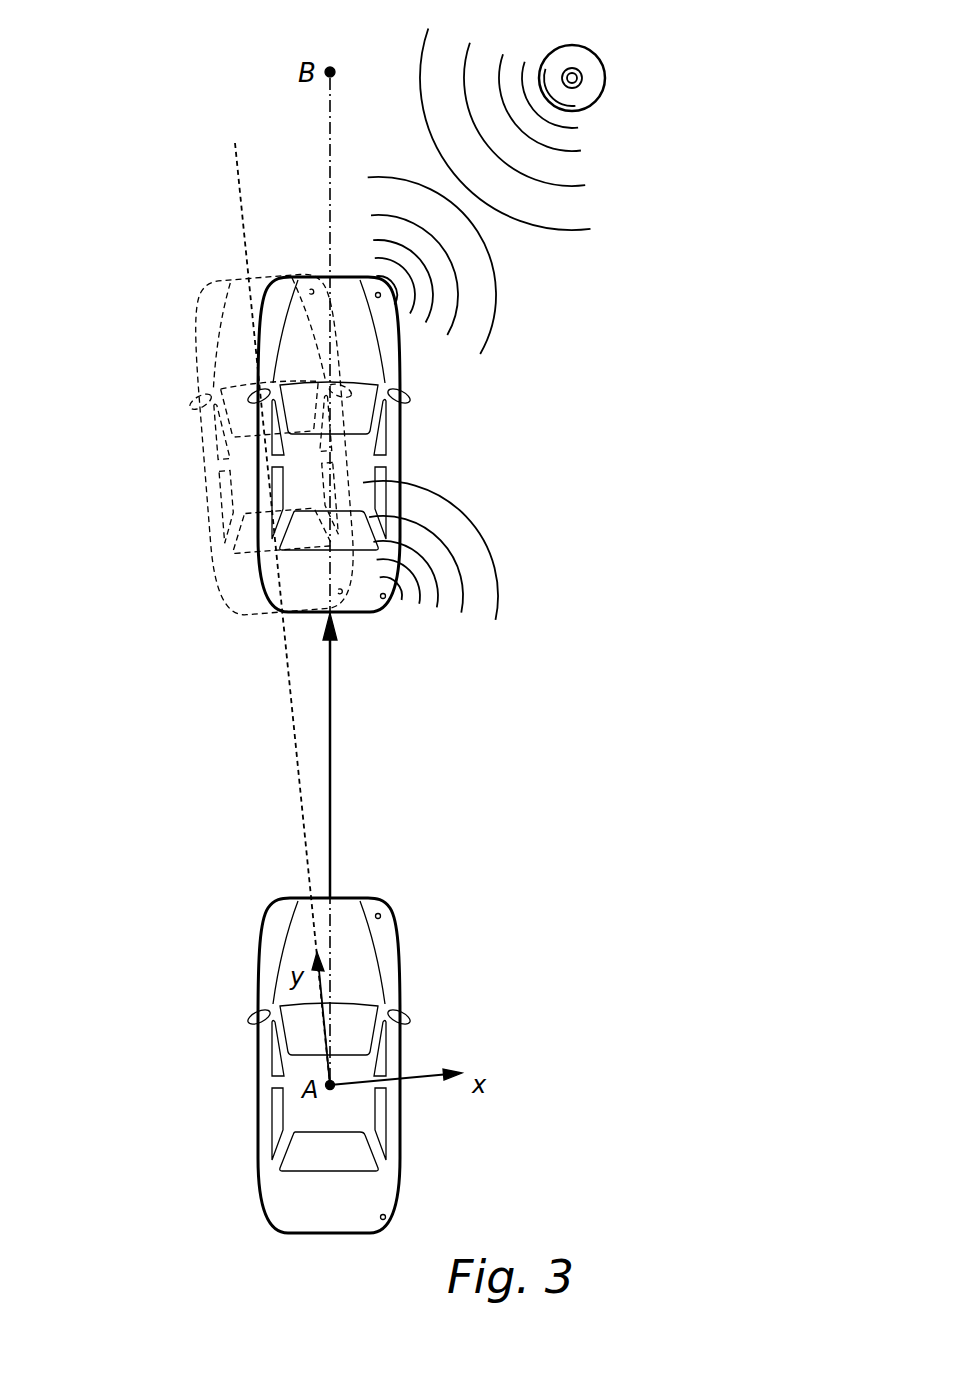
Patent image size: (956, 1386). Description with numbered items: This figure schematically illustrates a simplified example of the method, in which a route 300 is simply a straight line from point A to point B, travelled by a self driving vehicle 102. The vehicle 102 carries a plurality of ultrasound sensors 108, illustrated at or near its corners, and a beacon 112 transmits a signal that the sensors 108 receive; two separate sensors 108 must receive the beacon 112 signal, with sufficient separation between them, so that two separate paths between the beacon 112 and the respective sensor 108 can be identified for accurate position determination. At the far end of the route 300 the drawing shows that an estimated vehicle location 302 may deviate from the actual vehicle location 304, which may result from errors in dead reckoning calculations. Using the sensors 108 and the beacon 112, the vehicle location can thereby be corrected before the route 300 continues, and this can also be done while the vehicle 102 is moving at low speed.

The self driving vehicle 102 is at (398, 1150).
The ultrasound sensor 108 is at (380, 295).
The beacon 112 is at (605, 67).
The route 300 is at (332, 760).
The estimated vehicle location 302 is at (198, 472).
The actual vehicle location 304 is at (400, 428).